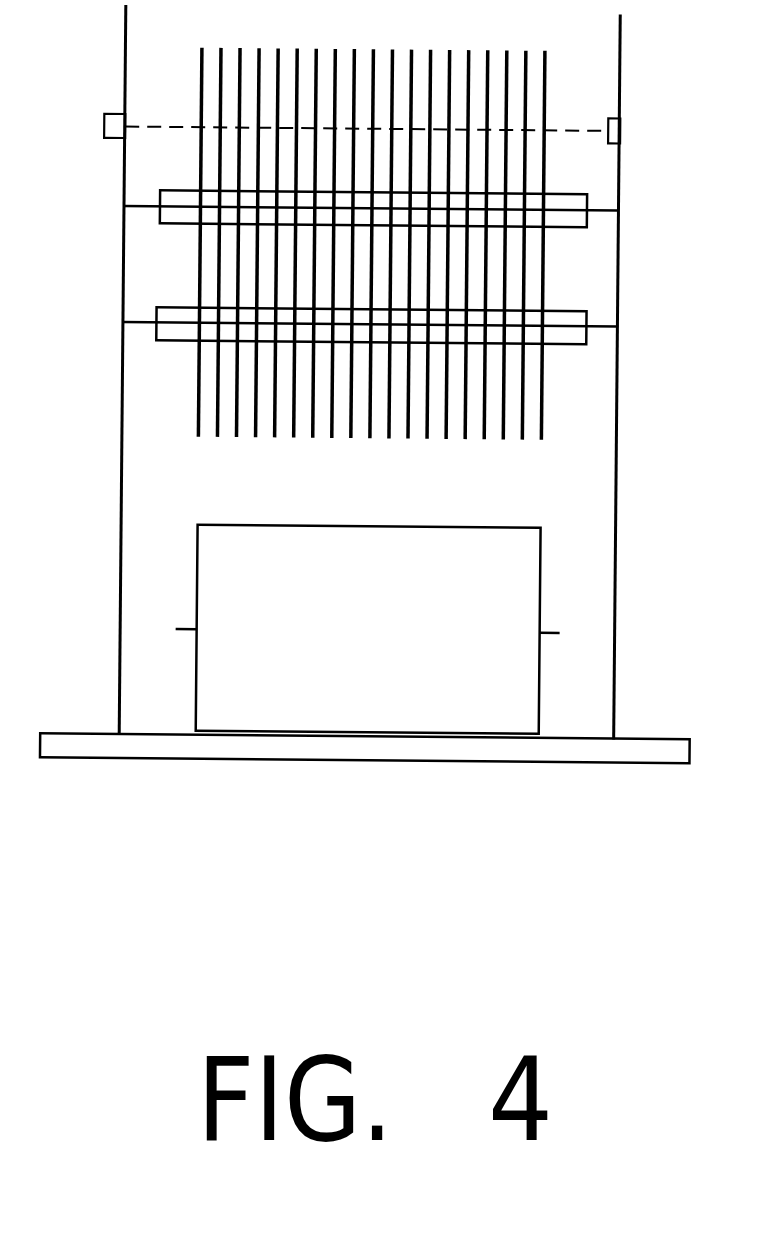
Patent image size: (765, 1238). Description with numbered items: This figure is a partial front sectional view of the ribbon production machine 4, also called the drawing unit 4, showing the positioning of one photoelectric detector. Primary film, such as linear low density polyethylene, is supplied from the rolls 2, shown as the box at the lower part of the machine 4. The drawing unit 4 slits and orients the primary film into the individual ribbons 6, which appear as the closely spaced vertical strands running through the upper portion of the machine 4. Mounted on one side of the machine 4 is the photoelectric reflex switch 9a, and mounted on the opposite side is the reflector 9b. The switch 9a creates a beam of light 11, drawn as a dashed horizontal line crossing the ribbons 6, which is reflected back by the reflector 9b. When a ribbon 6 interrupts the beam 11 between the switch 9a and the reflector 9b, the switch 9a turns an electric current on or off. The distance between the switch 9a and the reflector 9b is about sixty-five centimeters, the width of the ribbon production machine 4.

The rolls 2 is at (491, 523).
The drawing unit 4 is at (620, 452).
The individual ribbons 6 is at (200, 62).
The photoelectric reflex switch 9a is at (104, 117).
The reflector 9b is at (620, 113).
The beam of light 11 is at (570, 123).